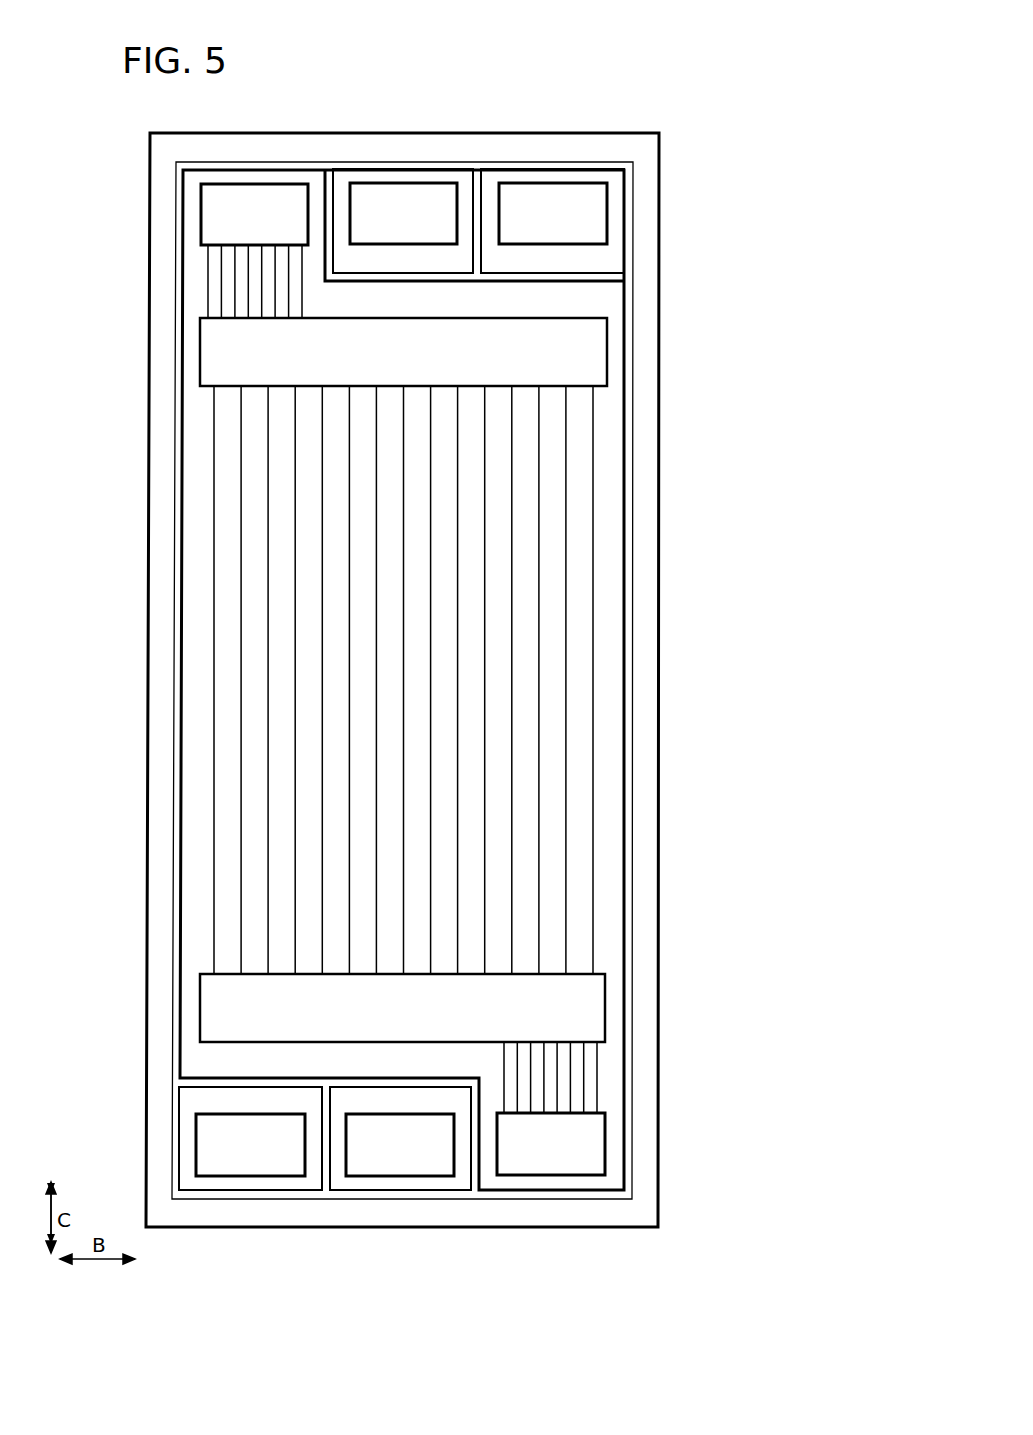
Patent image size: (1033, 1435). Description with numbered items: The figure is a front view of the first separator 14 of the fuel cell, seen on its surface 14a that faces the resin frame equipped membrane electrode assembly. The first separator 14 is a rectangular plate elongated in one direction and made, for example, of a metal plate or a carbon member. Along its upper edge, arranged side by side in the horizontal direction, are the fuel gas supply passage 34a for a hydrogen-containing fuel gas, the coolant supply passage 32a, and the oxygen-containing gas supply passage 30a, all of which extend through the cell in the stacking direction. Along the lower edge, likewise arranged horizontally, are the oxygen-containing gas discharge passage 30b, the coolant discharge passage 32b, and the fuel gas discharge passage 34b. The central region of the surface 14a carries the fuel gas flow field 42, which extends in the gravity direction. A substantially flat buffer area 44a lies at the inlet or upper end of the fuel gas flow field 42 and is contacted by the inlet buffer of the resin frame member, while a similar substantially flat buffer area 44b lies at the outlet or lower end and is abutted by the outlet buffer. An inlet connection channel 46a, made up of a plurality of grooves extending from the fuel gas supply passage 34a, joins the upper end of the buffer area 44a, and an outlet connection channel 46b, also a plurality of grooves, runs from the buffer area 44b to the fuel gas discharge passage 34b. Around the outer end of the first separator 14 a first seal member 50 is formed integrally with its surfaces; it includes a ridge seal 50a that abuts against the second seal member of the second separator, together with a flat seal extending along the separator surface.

The first separator 14 is at (324, 80).
The surface of the first separator 14a is at (643, 1161).
The oxygen-containing gas supply passage 30a is at (528, 200).
The coolant supply passage 32a is at (388, 192).
The fuel gas supply passage 34a is at (229, 202).
The oxygen-containing gas discharge passage 30b is at (222, 1158).
The coolant discharge passage 32b is at (375, 1163).
The fuel gas discharge passage 34b is at (526, 1157).
The fuel gas flow field 42 is at (543, 503).
The buffer area 44a is at (587, 348).
The buffer area 44b is at (585, 996).
The inlet connection channel 46a is at (213, 295).
The outlet connection channel 46b is at (593, 1075).
The first seal member 50 is at (661, 250).
The ridge seal 50a is at (630, 419).